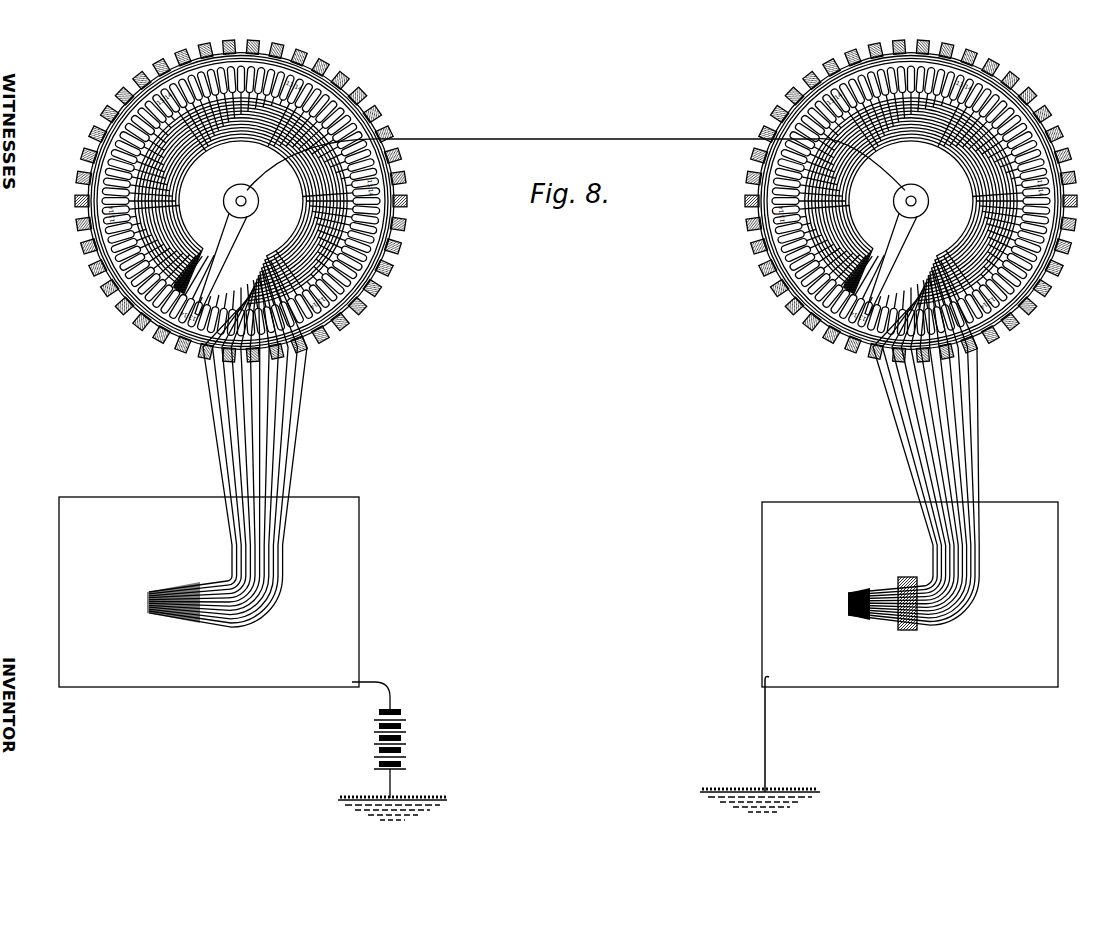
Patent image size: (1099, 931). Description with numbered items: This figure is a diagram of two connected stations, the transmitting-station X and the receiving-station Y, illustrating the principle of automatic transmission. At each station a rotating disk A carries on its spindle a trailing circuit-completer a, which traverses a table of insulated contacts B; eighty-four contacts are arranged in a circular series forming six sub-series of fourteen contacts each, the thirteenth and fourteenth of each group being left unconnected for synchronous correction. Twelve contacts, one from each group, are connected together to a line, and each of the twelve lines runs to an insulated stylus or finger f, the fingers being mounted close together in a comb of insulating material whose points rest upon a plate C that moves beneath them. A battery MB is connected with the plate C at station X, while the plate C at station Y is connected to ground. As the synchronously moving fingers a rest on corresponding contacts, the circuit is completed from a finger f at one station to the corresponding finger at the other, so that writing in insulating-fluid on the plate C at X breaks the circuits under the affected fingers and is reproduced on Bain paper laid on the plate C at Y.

The transmitting-station X is at (273, 349).
The receiving-station Y is at (946, 355).
The rotating disk A is at (394, 250).
The table of insulated contacts B is at (122, 270).
The trailing circuit-completer a is at (233, 240).
The metallic plate C is at (558, 592).
The insulated stylus or finger f is at (203, 618).
The battery MB is at (394, 740).